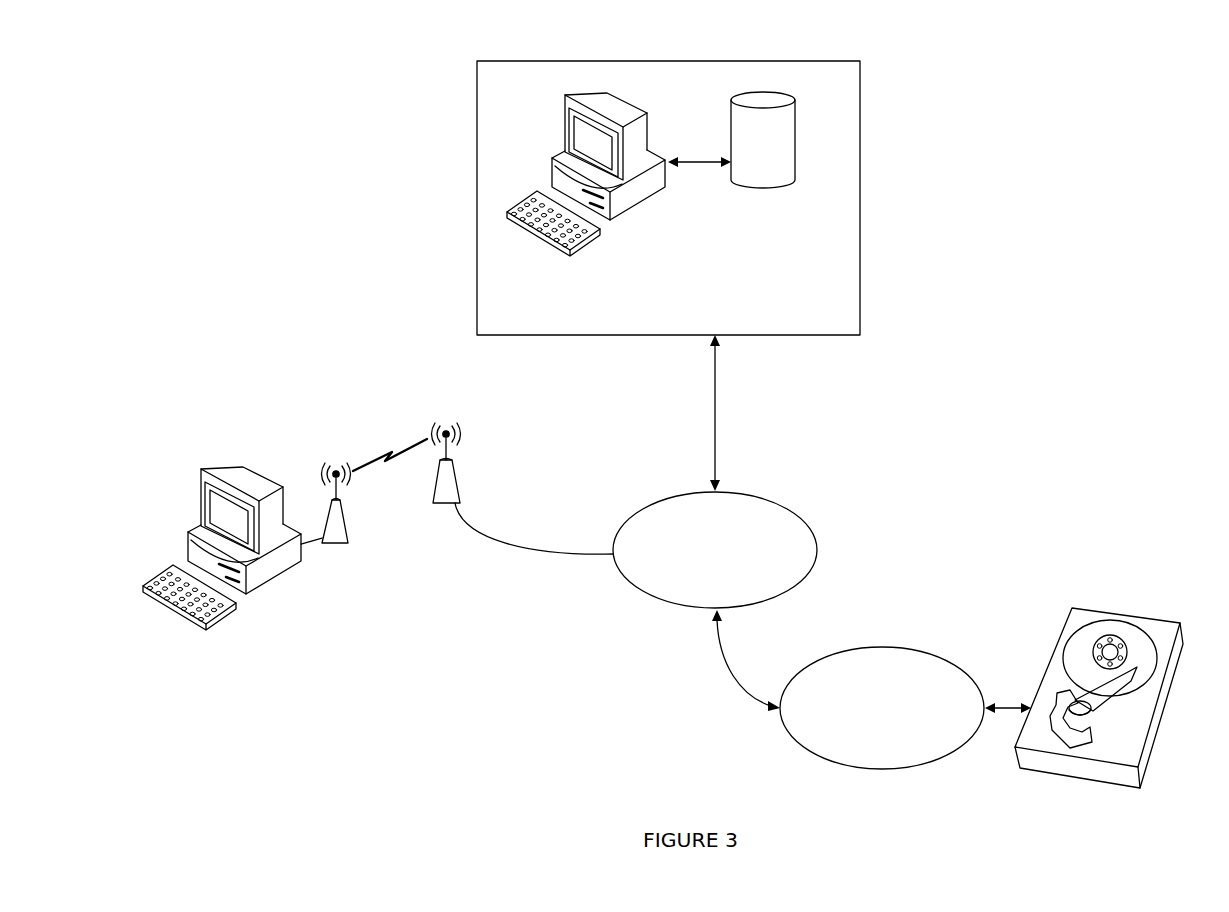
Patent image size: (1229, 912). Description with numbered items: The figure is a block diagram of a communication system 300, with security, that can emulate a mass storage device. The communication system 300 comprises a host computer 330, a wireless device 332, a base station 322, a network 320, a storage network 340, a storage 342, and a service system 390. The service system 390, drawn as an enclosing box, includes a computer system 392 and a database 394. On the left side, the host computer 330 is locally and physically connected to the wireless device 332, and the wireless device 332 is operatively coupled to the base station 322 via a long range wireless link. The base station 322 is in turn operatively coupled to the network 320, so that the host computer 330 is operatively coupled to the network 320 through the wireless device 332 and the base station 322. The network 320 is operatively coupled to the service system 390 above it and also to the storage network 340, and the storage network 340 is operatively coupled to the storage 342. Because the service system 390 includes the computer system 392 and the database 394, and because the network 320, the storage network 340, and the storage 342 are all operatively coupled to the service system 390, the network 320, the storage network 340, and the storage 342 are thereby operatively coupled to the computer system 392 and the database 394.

The communication system 300 is at (272, 40).
The service system 390 is at (477, 104).
The computer system 392 is at (645, 112).
The database 394 is at (782, 154).
The network 320 is at (699, 569).
The storage network 340 is at (864, 746).
The storage 342 is at (1127, 613).
The host computer 330 is at (212, 468).
The wireless device 332 is at (337, 547).
The base station 322 is at (442, 507).